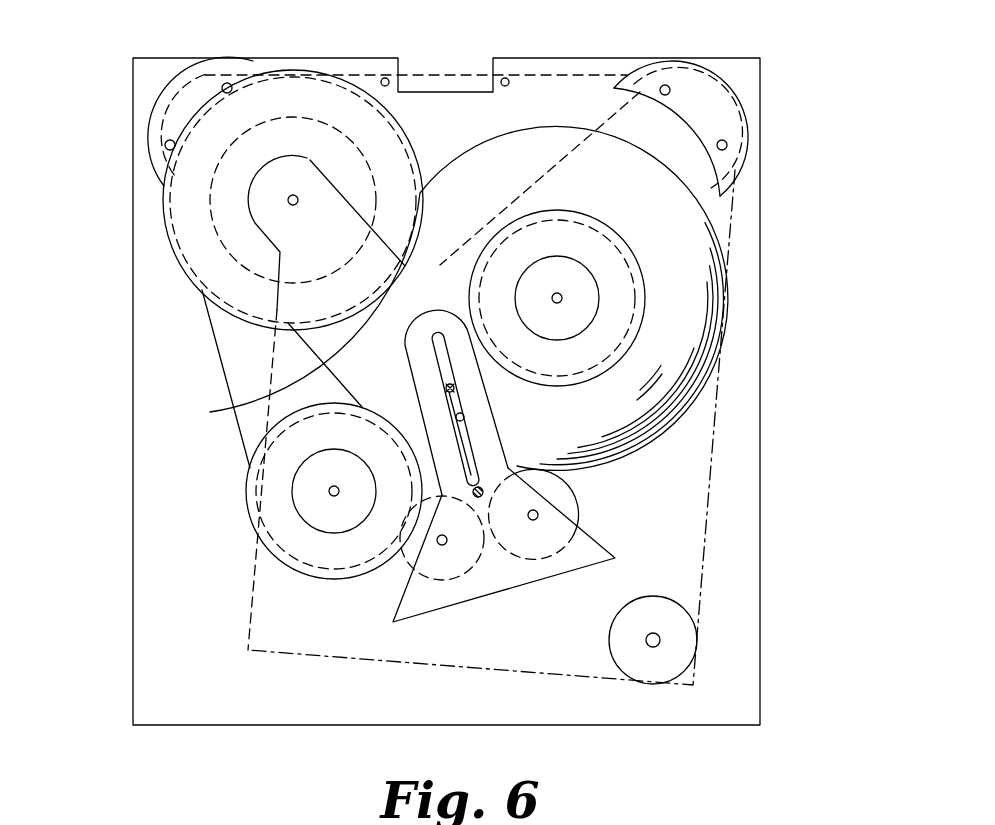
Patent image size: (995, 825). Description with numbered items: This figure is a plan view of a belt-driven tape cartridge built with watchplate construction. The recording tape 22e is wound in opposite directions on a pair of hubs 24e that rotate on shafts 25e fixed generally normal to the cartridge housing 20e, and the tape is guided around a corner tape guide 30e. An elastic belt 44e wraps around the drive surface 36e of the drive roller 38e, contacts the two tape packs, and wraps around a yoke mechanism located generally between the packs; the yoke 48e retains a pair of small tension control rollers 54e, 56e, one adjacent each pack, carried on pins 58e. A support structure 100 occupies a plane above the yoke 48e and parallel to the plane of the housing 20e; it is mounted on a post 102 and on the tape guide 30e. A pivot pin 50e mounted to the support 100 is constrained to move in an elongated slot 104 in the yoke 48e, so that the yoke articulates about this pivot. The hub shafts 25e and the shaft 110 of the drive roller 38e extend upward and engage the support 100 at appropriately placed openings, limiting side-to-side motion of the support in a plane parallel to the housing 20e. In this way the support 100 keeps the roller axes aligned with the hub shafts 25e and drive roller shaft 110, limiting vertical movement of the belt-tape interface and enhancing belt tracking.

The cartridge housing 20e is at (742, 617).
The recording tape 22e is at (228, 373).
The hub 24e is at (588, 303).
The hub shaft 25e is at (565, 295).
The tape guide 30e is at (155, 100).
The drive surface 36e is at (212, 225).
The drive roller 38e is at (200, 140).
The elastic belt 44e is at (445, 298).
The yoke 48e is at (462, 597).
The pivot pin 50e is at (446, 388).
The pivot 54e is at (566, 503).
The pivot 56e is at (408, 575).
The pin 58e is at (540, 520).
The support structure 100 is at (715, 471).
The post 102 is at (653, 668).
The elongated slot 104 is at (464, 417).
The drive roller shaft 110 is at (296, 196).